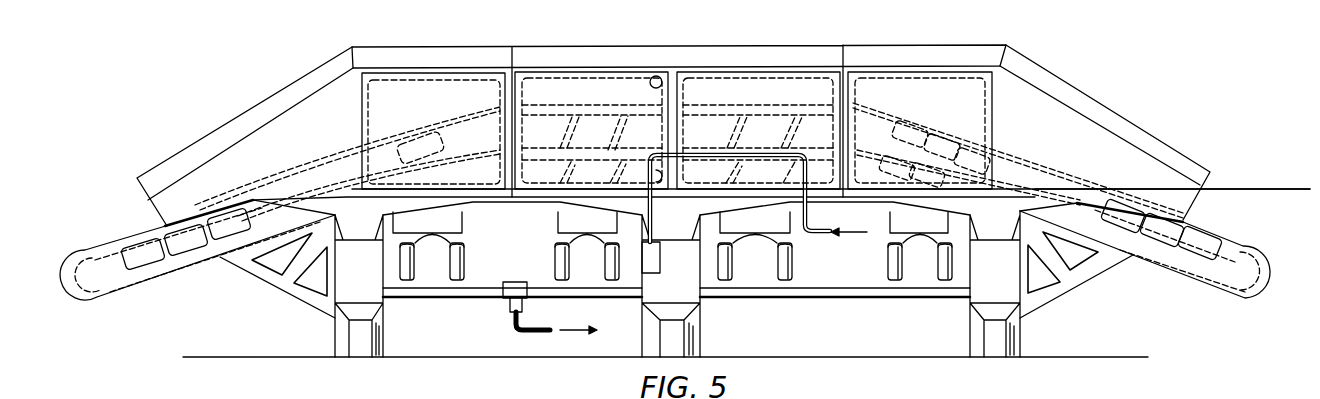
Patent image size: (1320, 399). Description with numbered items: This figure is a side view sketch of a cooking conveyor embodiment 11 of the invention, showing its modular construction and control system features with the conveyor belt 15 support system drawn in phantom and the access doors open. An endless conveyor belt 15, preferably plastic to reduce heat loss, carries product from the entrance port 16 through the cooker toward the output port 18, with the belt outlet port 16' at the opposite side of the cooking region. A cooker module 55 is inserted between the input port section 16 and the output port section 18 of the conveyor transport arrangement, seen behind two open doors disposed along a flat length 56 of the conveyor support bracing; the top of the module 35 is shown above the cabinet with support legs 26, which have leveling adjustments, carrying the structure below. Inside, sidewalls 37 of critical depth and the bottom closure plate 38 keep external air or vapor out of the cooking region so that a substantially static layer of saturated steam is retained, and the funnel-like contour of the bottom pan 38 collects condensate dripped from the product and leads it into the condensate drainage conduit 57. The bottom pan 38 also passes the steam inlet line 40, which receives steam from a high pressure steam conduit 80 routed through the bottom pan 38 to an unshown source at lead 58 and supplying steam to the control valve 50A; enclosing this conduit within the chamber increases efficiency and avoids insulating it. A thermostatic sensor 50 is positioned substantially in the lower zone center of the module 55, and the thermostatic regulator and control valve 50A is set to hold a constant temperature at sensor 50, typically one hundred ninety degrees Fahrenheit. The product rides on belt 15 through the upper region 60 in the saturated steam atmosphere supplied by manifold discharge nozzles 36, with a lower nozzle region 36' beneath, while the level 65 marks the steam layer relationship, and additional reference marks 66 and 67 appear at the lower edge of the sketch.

The apparatus 11 is at (730, 22).
The conveyor belt 15 is at (90, 302).
The entrance port 16 is at (243, 136).
The outlet port 16' is at (1120, 132).
The output port 18 is at (1250, 302).
The support legs 26 is at (387, 305).
The top frame 35 is at (743, 68).
The manifold discharge nozzles 36 is at (778, 97).
The deck 36' is at (781, 208).
The sidewalls 37 is at (753, 101).
The bottom closure plate 38 is at (560, 218).
The steam inlet line 40 is at (665, 270).
The thermostatic sensor 50 is at (674, 130).
The control valve 50A is at (645, 265).
The cooker module 55 is at (848, 92).
The flat length 56 is at (582, 96).
The condensate drainage conduit 57 is at (790, 294).
The lead 58 is at (867, 238).
The upper region 60 is at (618, 87).
The level 65 is at (1292, 186).
The element 66 is at (484, 395).
The element 67 is at (974, 394).
The high pressure steam conduit 80 is at (760, 148).